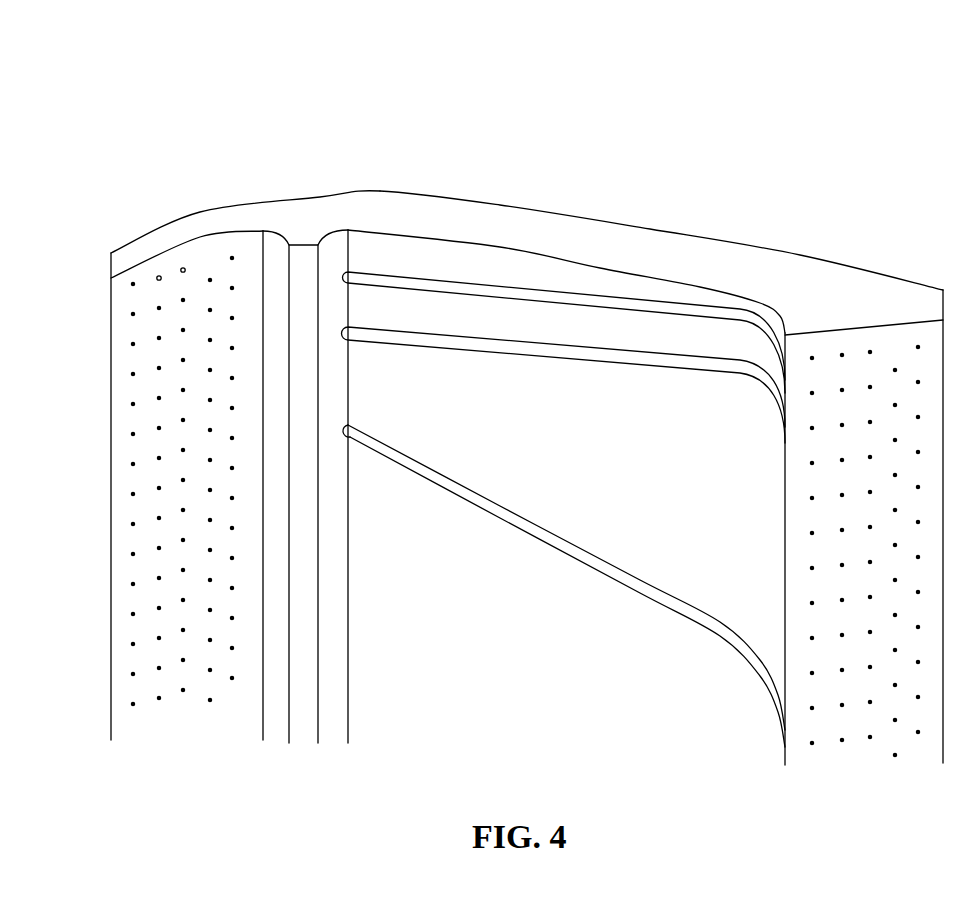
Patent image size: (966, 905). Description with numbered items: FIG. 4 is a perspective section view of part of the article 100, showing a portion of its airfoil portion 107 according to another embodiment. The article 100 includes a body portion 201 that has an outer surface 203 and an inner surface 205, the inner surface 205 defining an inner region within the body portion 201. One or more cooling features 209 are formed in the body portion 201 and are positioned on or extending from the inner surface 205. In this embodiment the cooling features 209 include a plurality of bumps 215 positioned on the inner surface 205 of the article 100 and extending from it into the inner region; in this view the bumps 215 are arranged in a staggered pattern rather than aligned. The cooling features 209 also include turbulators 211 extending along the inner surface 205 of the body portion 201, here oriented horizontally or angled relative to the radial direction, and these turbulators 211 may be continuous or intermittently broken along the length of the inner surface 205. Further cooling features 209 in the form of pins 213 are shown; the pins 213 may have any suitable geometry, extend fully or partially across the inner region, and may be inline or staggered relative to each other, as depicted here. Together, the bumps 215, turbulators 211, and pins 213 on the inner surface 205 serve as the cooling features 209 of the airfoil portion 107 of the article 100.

The article 100 is at (300, 88).
The airfoil portion 107 is at (407, 195).
The body portion 201 is at (125, 262).
The outer surface 203 is at (143, 230).
The inner surface 205 is at (235, 243).
The cooling features 209 is at (133, 375).
The turbulators 211 is at (462, 475).
The pins 213 is at (870, 353).
The bumps 215 is at (183, 270).